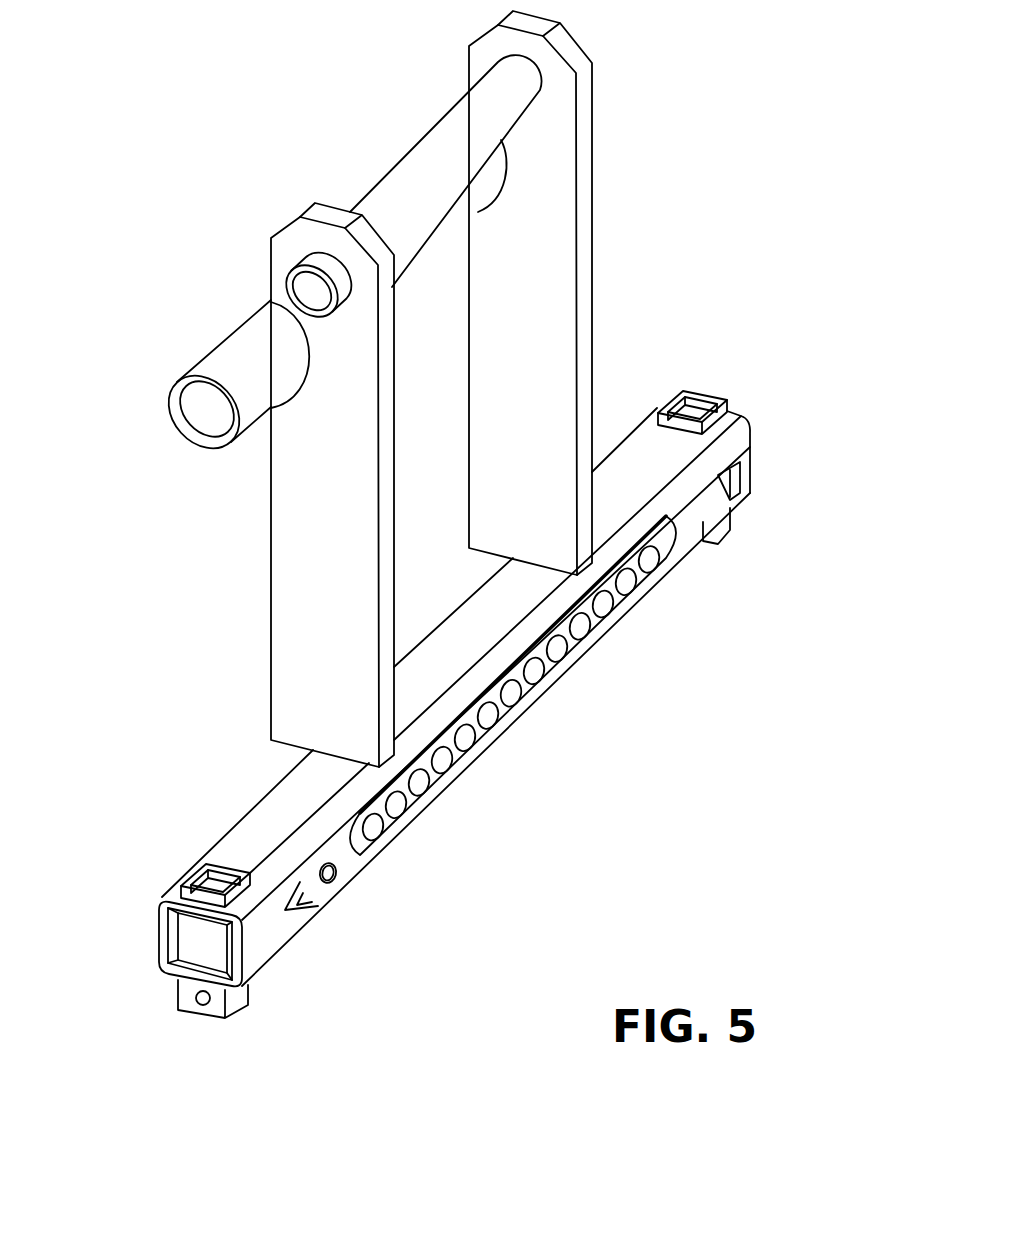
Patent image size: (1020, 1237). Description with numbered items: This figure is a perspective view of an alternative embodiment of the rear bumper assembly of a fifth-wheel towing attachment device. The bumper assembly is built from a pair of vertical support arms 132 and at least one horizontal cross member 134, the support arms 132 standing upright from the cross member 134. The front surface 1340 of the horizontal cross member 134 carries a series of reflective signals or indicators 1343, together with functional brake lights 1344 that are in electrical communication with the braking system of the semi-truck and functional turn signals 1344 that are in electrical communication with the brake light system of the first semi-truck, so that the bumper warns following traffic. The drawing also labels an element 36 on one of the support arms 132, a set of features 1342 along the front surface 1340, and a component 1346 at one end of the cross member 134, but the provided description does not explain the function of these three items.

The tube 36 is at (213, 362).
The vertical support arms 132 is at (303, 557).
The horizontal cross member 134 is at (652, 450).
The front surface 1340 is at (690, 513).
The adjustment holes 1342 is at (537, 667).
The reflective signals/indicators 1343 is at (337, 873).
The functional brake lights / turn signals 1344 is at (742, 478).
The locking block 1346 is at (205, 877).